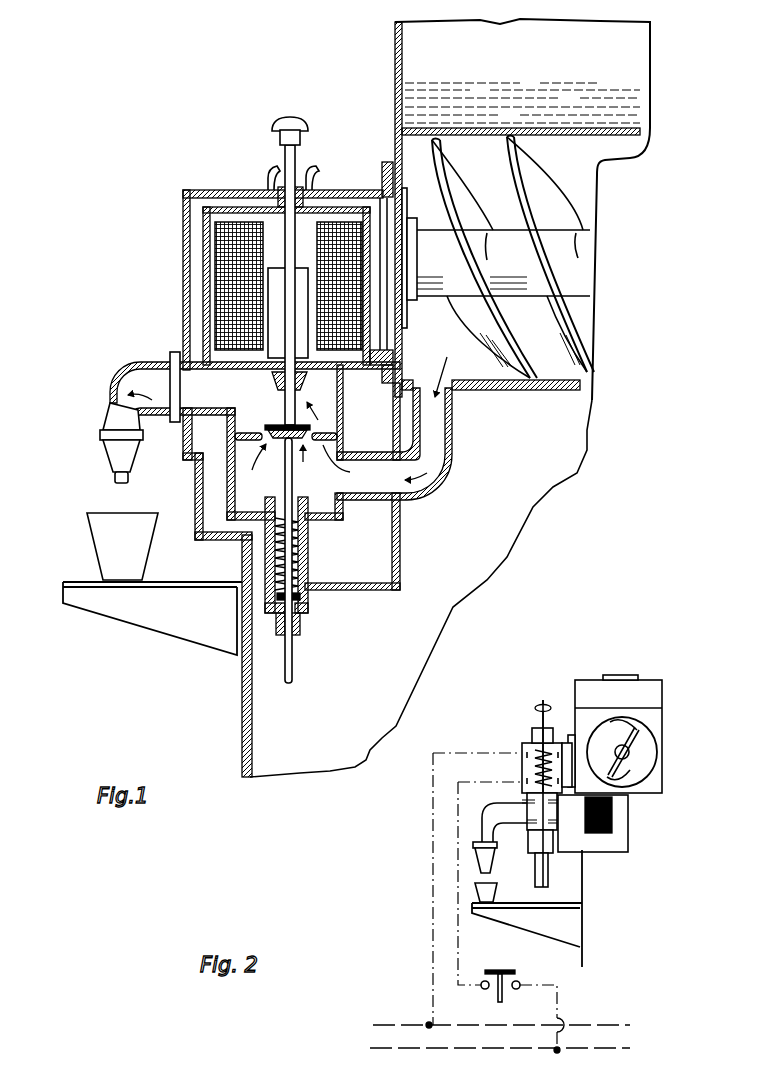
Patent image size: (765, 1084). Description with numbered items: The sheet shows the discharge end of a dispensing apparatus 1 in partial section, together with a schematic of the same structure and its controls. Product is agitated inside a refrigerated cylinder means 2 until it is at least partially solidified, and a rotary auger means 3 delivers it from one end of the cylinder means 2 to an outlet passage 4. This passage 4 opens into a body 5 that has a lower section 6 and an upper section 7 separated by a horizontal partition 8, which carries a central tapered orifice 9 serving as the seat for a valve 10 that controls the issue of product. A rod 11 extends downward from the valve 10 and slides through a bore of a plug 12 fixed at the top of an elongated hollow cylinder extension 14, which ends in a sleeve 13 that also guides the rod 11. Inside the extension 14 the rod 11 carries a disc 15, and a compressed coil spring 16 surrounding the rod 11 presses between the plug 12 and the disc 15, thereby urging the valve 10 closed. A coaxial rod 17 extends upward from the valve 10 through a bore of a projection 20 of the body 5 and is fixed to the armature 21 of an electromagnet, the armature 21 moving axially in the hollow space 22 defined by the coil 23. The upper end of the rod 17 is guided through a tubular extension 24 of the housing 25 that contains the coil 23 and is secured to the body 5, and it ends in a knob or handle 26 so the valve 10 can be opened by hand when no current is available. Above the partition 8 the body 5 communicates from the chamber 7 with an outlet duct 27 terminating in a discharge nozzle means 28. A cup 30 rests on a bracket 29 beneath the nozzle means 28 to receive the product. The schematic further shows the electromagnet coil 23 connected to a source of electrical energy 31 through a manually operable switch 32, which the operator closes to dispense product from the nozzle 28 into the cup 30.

In FIG. 1, the dispensing apparatus 1 is at (660, 63).
In FIG. 2, the dispensing apparatus 1 is at (603, 672).
In FIG. 1, the refrigerated cylinder means 2 is at (583, 167).
In FIG. 2, the refrigerated cylinder means 2 is at (648, 732).
In FIG. 1, the rotary auger means 3 is at (566, 221).
In FIG. 2, the rotary auger means 3 is at (618, 745).
In FIG. 1, the outlet passage 4 is at (456, 438).
In FIG. 2, the outlet passage 4 is at (628, 827).
In FIG. 1, the body 5 is at (338, 437).
In FIG. 2, the body 5 is at (541, 793).
In FIG. 1, the lower section 6 is at (323, 517).
In FIG. 1, the upper section 7 is at (327, 410).
In FIG. 1, the horizontal partition 8 is at (325, 445).
In FIG. 1, the central tapered orifice 9 is at (263, 442).
In FIG. 1, the valve 10 is at (298, 470).
In FIG. 1, the rod 11 is at (290, 567).
In FIG. 1, the plug 12 is at (258, 527).
In FIG. 1, the sleeve 13 is at (295, 630).
In FIG. 1, the elongated hollow cylinder extension 14 is at (352, 541).
In FIG. 1, the disc 15 is at (277, 615).
In FIG. 1, the compressed coil spring 16 is at (242, 592).
In FIG. 1, the rod 17 is at (303, 397).
In FIG. 1, the projection 20 is at (282, 375).
In FIG. 1, the armature 21 is at (278, 290).
In FIG. 1, the hollow space 22 is at (272, 237).
In FIG. 1, the coil 23 is at (230, 308).
In FIG. 2, the coil 23 is at (533, 757).
In FIG. 1, the tubular extension 24 is at (268, 187).
In FIG. 1, the housing 25 is at (210, 205).
In FIG. 1, the knob or handle 26 is at (291, 117).
In FIG. 2, the knob or handle 26 is at (545, 700).
In FIG. 1, the outlet duct 27 is at (137, 362).
In FIG. 2, the outlet duct 27 is at (490, 810).
In FIG. 1, the discharge nozzle means 28 is at (112, 452).
In FIG. 2, the discharge nozzle means 28 is at (475, 856).
In FIG. 1, the bracket 29 is at (143, 612).
In FIG. 2, the bracket 29 is at (583, 921).
In FIG. 1, the cup 30 is at (137, 518).
In FIG. 2, the cup 30 is at (475, 894).
In FIG. 2, the source of electrical energy 31 is at (598, 1024).
In FIG. 2, the manually operable switch 32 is at (506, 970).